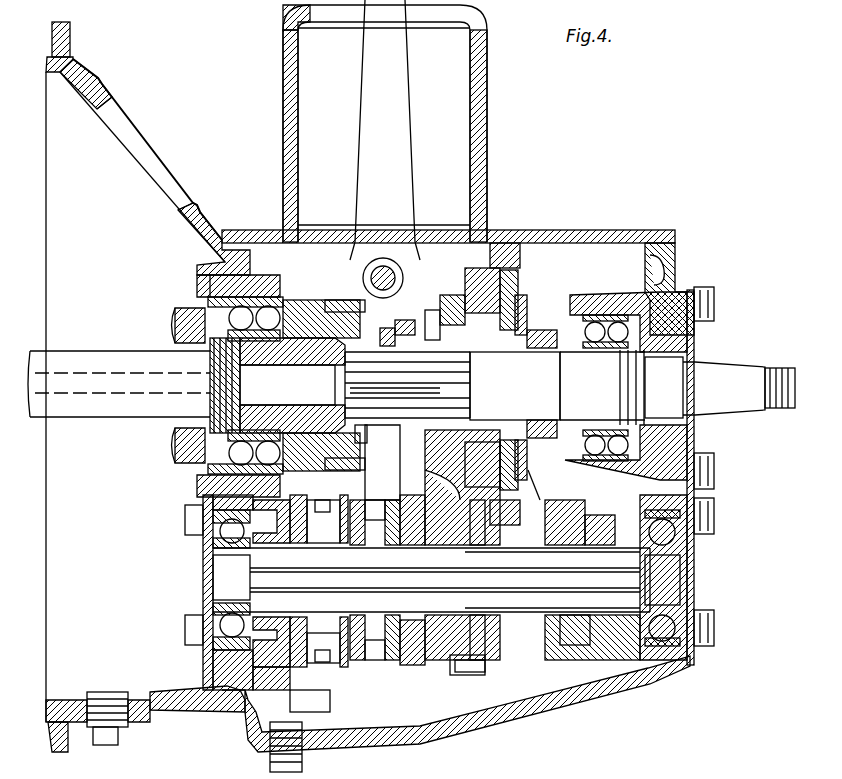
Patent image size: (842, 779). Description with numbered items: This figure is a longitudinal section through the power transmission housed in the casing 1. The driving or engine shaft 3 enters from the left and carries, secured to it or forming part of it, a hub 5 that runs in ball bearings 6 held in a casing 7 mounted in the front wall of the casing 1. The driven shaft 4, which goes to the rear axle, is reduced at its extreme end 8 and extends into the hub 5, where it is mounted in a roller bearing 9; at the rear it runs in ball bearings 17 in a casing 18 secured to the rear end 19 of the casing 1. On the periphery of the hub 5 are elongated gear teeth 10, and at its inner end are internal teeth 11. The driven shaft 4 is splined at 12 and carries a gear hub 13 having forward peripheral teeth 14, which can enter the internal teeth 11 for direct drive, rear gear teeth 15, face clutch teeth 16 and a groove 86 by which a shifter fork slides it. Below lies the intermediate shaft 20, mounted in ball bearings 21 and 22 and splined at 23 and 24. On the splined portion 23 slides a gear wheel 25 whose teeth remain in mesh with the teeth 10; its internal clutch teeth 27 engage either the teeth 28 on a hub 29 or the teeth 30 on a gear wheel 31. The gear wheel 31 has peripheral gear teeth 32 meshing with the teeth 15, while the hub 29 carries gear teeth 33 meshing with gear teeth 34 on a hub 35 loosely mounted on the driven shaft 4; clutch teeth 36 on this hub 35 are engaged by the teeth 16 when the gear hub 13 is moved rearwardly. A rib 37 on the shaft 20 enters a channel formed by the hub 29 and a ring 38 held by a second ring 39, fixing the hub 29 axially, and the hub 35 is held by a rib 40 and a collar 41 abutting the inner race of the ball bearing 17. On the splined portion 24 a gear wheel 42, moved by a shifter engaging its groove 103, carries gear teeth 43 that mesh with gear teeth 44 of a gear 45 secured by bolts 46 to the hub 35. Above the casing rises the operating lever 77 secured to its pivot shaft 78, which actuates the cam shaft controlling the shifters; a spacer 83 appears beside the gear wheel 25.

The casing 1 is at (511, 727).
The driving or engine shaft 3 is at (72, 408).
The driven shaft 4 is at (730, 398).
The hub 5 is at (218, 362).
The ball bearings 6 is at (205, 318).
The casing 7 is at (200, 280).
The reduced extreme end of driven shaft 8 is at (292, 385).
The roller bearing 9 is at (287, 385).
The gear teeth 10 is at (325, 318).
The internal teeth 11 is at (346, 381).
The splined portion 12 is at (455, 372).
The gear hub 13 is at (382, 462).
The peripheral teeth 14 is at (370, 435).
The gear teeth 15 is at (408, 320).
The clutch teeth 16 is at (428, 315).
The ball bearings 17 is at (590, 330).
The casing 18 is at (626, 396).
The rear end of main casing 19 is at (680, 269).
The intermediate shaft 20 is at (462, 545).
The ball bearings 21 is at (232, 578).
The ball bearings 22 is at (662, 578).
The splined portion 23 is at (260, 580).
The splined portion 24 is at (628, 590).
The gear wheel 25 is at (282, 660).
The internal clutch teeth 27 is at (319, 581).
The teeth 28 is at (360, 665).
The hub 29 is at (400, 610).
The teeth 30 is at (373, 592).
The gear wheel 31 is at (387, 601).
The gear teeth 32 is at (398, 670).
The gear teeth 33 is at (468, 670).
The gear teeth 34 is at (485, 295).
The hub 35 is at (535, 380).
The clutch teeth 36 is at (440, 300).
The rib 37 is at (485, 620).
The ring 38 is at (485, 535).
The second ring 39 is at (490, 660).
The rib 40 is at (455, 402).
The collar 41 is at (550, 373).
The gear wheel 42 is at (565, 650).
The gear teeth 43 is at (565, 520).
The gear teeth 44 is at (512, 242).
The gear 45 is at (545, 484).
The bolts 46 is at (522, 300).
The operating lever 77 is at (392, 152).
The shaft 78 is at (368, 270).
The spacer 83 is at (271, 583).
The groove 86 is at (381, 328).
The groove 103 is at (595, 535).